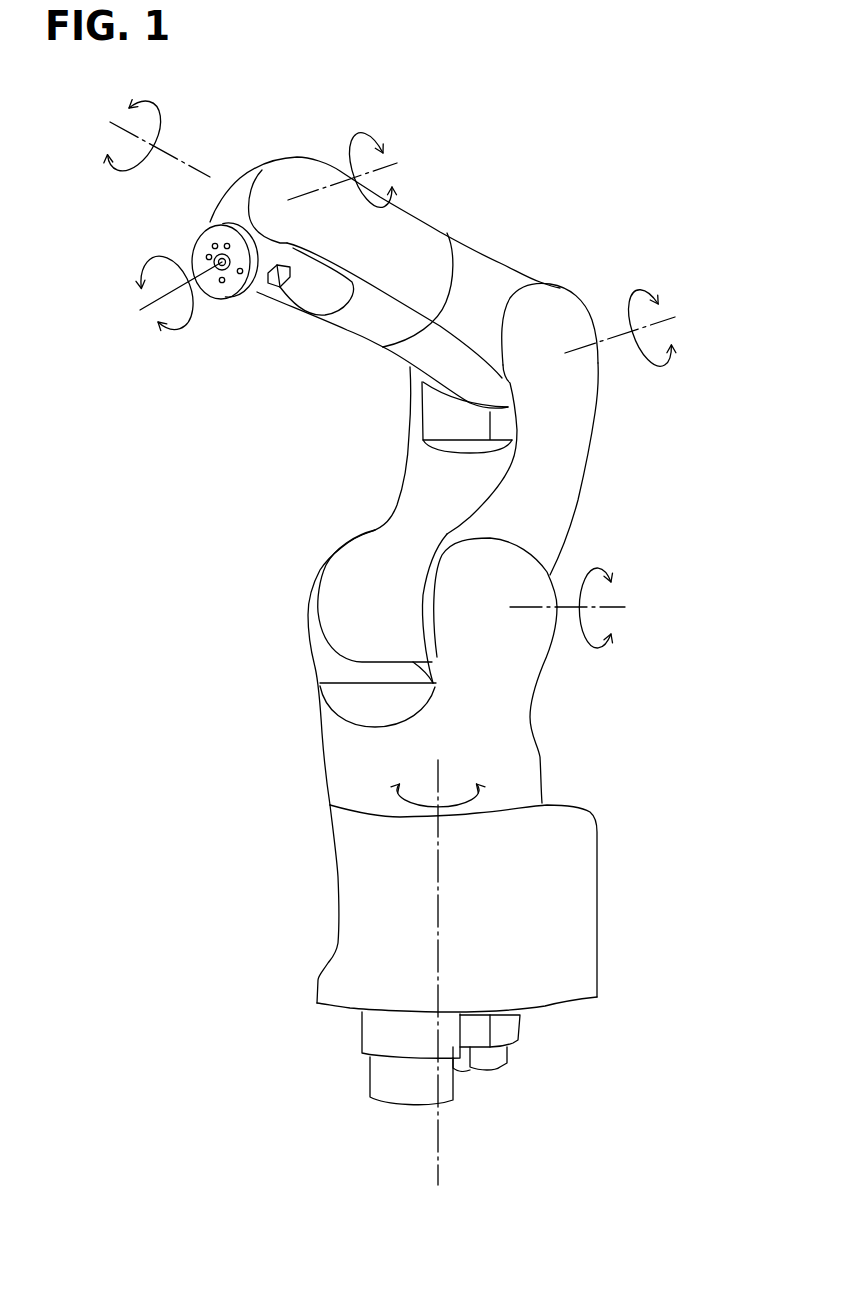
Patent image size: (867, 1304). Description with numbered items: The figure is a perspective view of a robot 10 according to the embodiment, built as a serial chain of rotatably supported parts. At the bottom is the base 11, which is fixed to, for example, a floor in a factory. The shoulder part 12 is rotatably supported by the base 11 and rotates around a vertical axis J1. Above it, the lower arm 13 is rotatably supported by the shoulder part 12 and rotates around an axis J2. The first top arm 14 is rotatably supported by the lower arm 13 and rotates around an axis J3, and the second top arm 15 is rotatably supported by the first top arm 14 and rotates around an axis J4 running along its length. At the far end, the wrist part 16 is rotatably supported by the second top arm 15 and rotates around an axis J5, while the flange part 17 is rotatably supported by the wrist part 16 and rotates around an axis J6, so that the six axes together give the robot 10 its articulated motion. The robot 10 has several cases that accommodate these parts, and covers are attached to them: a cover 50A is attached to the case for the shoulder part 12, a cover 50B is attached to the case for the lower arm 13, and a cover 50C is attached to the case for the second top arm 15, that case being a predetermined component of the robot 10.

The robot 10 is at (612, 110).
The base 11 is at (337, 882).
The shoulder part 12 is at (540, 755).
The lower arm 13 is at (385, 524).
The first top arm 14 is at (520, 273).
The second top arm 15 is at (422, 222).
The wrist part 16 is at (263, 171).
The flange part 17 is at (195, 237).
The cover 50A is at (523, 650).
The cover 50B is at (575, 450).
The cover 50C is at (427, 247).
The axis J1 is at (438, 959).
The axis J2 is at (582, 608).
The axis J3 is at (633, 328).
The axis J4 is at (140, 138).
The axis J5 is at (358, 170).
The axis J6 is at (163, 294).